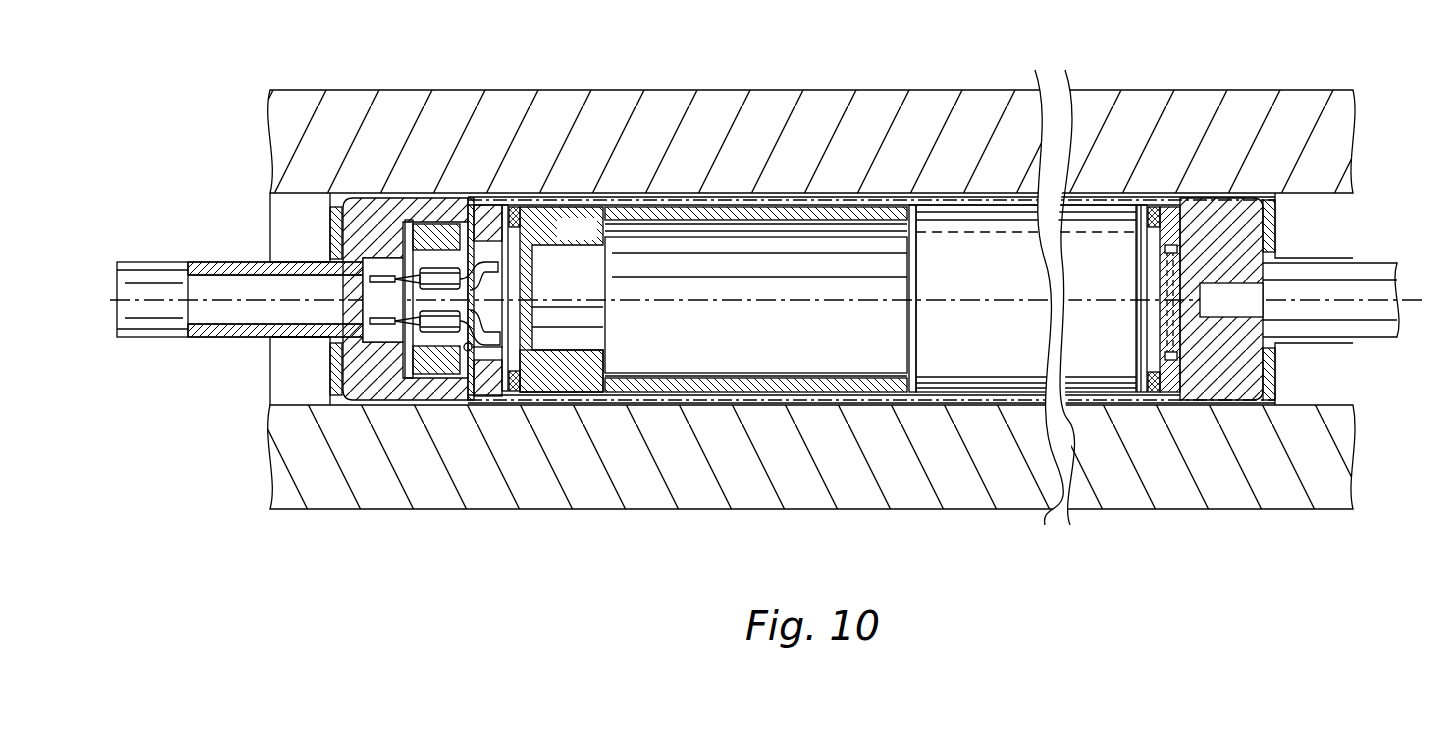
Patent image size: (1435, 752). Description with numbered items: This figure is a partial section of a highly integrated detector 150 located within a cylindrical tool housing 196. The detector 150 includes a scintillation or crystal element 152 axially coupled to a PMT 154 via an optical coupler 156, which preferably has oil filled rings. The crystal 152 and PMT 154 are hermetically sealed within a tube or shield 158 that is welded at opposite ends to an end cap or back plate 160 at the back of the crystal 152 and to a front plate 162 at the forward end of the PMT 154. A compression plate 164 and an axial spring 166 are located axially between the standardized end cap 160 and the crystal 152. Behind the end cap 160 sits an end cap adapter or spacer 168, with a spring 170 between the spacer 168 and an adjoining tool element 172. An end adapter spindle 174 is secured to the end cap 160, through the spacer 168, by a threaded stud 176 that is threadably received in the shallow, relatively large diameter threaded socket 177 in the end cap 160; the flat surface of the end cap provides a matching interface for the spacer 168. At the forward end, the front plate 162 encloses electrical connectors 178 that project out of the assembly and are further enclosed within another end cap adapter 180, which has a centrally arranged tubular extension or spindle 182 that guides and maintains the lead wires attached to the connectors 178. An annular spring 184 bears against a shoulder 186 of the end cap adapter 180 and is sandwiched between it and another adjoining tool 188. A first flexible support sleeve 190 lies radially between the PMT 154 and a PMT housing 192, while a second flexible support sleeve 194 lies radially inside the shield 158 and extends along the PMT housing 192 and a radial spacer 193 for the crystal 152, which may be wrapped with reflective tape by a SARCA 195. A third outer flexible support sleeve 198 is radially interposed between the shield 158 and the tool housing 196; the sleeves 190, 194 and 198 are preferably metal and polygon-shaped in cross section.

The detector 150 is at (838, 178).
The scintillation or crystal element 152 is at (973, 345).
The PMT 154 is at (781, 346).
The optical coupler 156 is at (912, 290).
The tube or shield 158 is at (728, 207).
The end cap or back plate 160 is at (1160, 206).
The front plate 162 is at (488, 200).
The compression plate 164 is at (1142, 325).
The axial spring 166 is at (1153, 393).
The end cap adapter or spacer 168 is at (1220, 380).
The spring 170 is at (1268, 232).
The adjoining tool element 172 is at (1330, 379).
The end adapter spindle 174 is at (1376, 272).
The threaded stud 176 is at (1172, 268).
The threaded socket 177 is at (1172, 298).
The electrical connectors 178 is at (476, 240).
The end cap adapter 180 is at (368, 402).
The tubular extension or spindle 182 is at (226, 262).
The annular spring 184 is at (330, 374).
The shoulder 186 is at (330, 233).
The adjoining tool 188 is at (285, 372).
The first flexible support sleeve 190 is at (720, 380).
The PMT housing 192 is at (565, 372).
The radial spacer 193 is at (942, 206).
The second flexible support sleeve 194 is at (561, 299).
The SARCA 195 is at (963, 389).
The tool housing 196 is at (612, 101).
The third outer flexible support sleeve 198 is at (570, 196).